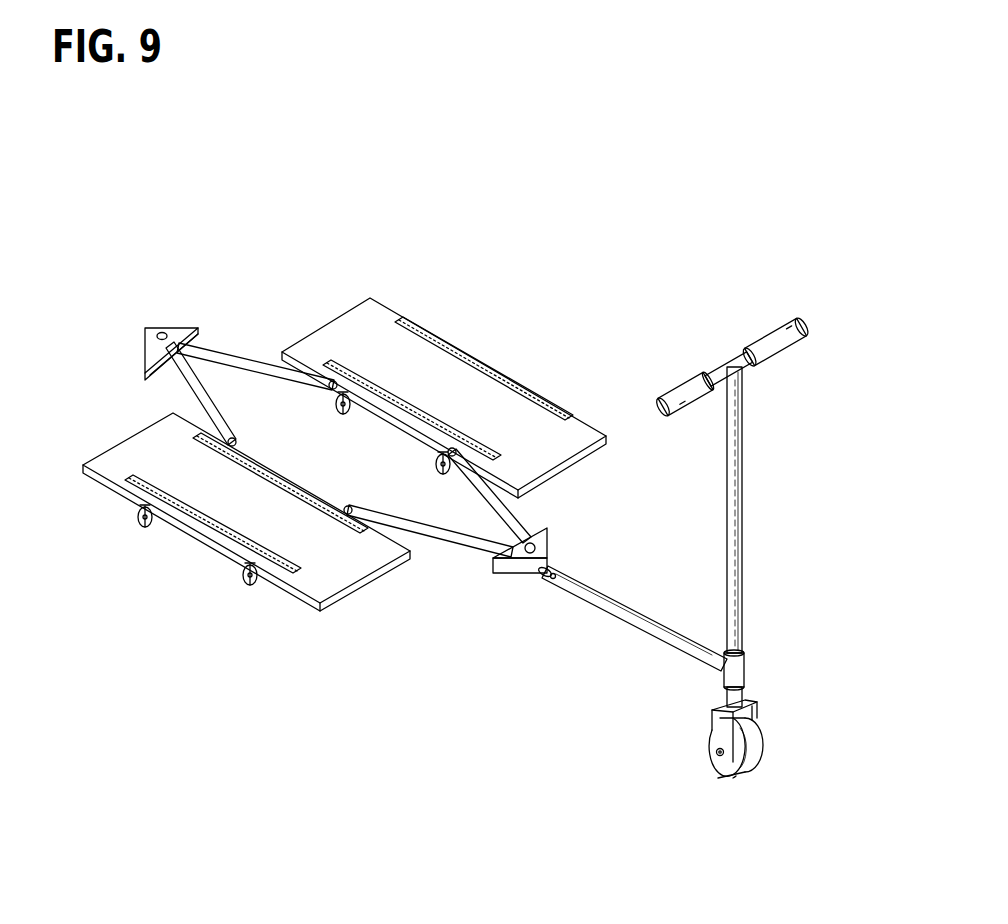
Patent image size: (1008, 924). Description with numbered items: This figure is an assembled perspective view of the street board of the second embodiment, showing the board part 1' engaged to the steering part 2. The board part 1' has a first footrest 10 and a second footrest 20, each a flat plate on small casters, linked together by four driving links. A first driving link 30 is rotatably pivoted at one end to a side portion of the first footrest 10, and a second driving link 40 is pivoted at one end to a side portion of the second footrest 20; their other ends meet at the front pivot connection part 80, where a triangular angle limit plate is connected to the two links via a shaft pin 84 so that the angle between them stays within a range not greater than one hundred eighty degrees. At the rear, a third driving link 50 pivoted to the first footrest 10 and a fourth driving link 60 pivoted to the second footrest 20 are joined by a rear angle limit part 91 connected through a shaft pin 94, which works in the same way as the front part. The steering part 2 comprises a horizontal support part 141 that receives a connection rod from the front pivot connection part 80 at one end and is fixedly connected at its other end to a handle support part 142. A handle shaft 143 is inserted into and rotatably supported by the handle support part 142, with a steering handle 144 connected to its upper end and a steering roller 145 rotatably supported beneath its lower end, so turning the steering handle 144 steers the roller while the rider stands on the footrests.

The board part 1' is at (280, 176).
The steering part 2 is at (799, 262).
The first footrest 10 is at (382, 317).
The second footrest 20 is at (115, 455).
The first driving link 30 is at (512, 530).
The second driving link 40 is at (455, 540).
The third driving link 50 is at (245, 355).
The fourth driving link 60 is at (210, 398).
The front pivot connection part 80 is at (510, 580).
The shaft pin 84 is at (531, 556).
The rear angle limit part 91 is at (150, 346).
The shaft pin 94 is at (163, 332).
The horizontal support part 141 is at (640, 615).
The handle support part 142 is at (746, 670).
The handle shaft 143 is at (742, 538).
The steering handle 144 is at (783, 336).
The steering roller 145 is at (762, 745).